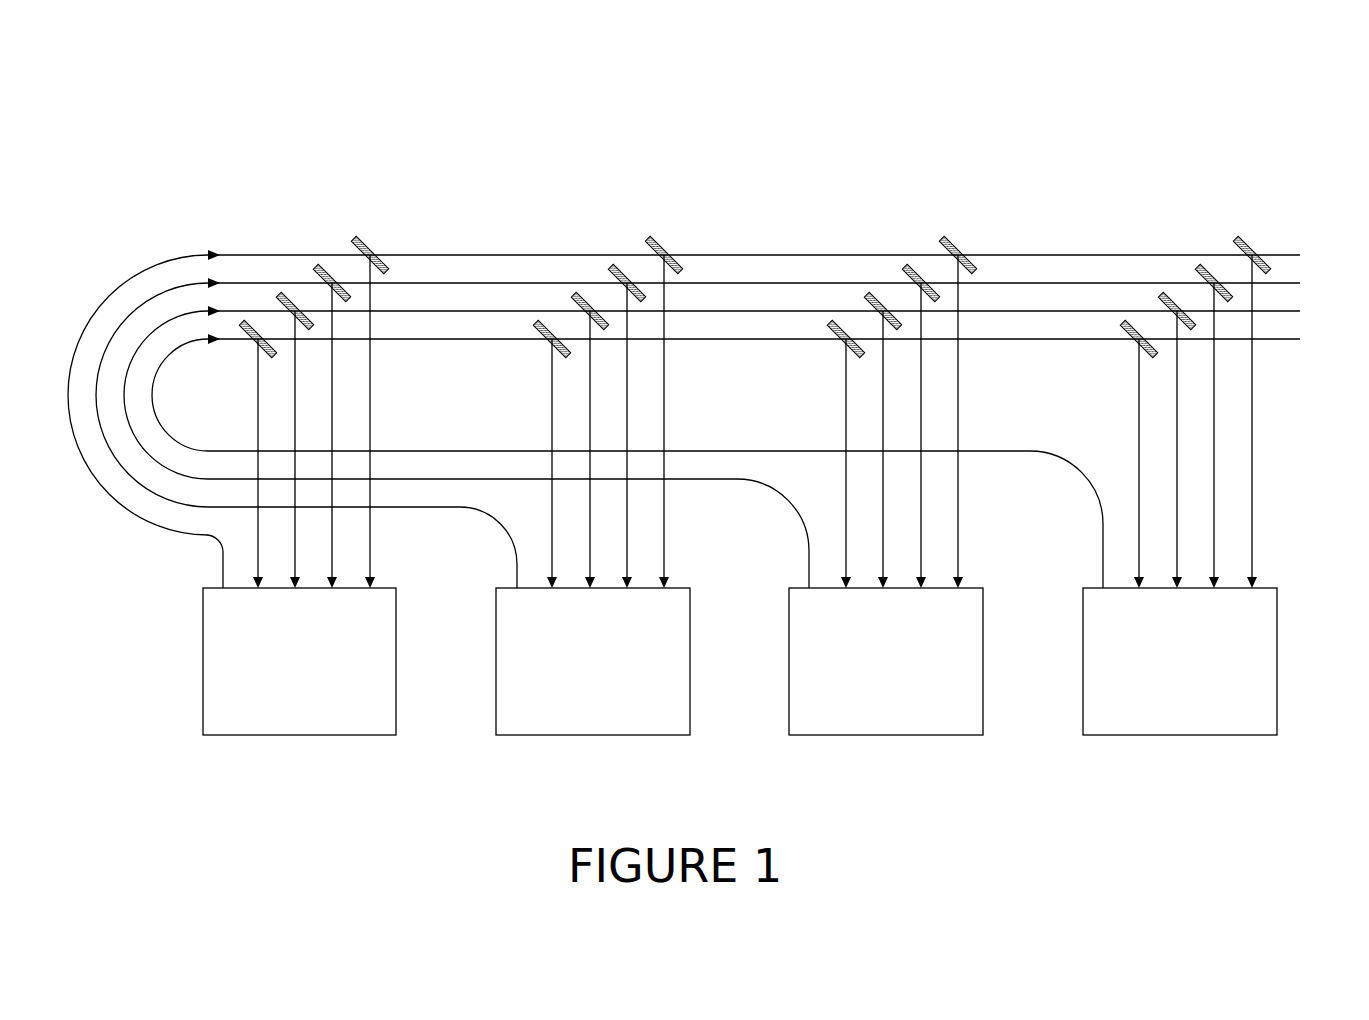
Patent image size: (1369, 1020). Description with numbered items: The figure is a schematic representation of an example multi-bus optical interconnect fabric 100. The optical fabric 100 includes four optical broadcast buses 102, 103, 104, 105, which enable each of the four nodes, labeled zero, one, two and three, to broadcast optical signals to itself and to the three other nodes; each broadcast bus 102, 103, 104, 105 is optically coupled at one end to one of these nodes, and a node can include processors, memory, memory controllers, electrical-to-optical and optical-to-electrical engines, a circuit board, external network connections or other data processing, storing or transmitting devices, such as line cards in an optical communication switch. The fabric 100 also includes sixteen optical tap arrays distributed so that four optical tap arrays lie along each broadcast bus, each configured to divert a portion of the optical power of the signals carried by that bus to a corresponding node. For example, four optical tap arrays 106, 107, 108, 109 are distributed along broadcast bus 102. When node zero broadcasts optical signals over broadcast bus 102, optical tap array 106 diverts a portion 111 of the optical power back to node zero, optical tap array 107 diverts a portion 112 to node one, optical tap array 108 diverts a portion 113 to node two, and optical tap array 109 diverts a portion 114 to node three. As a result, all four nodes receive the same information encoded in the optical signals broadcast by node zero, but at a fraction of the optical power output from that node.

The multi-bus optical interconnect fabric 100 is at (1140, 114).
The optical broadcast bus 102 is at (138, 515).
The optical broadcast bus 103 is at (457, 512).
The optical broadcast bus 104 is at (738, 482).
The optical broadcast bus 105 is at (1037, 457).
The optical tap array 106 is at (368, 245).
The optical tap array 107 is at (665, 243).
The optical tap array 108 is at (958, 243).
The optical tap array 109 is at (1250, 242).
The portion of optical power 111 is at (372, 408).
The portion of optical power 112 is at (667, 410).
The portion of optical power 113 is at (962, 410).
The portion of optical power 114 is at (1252, 412).